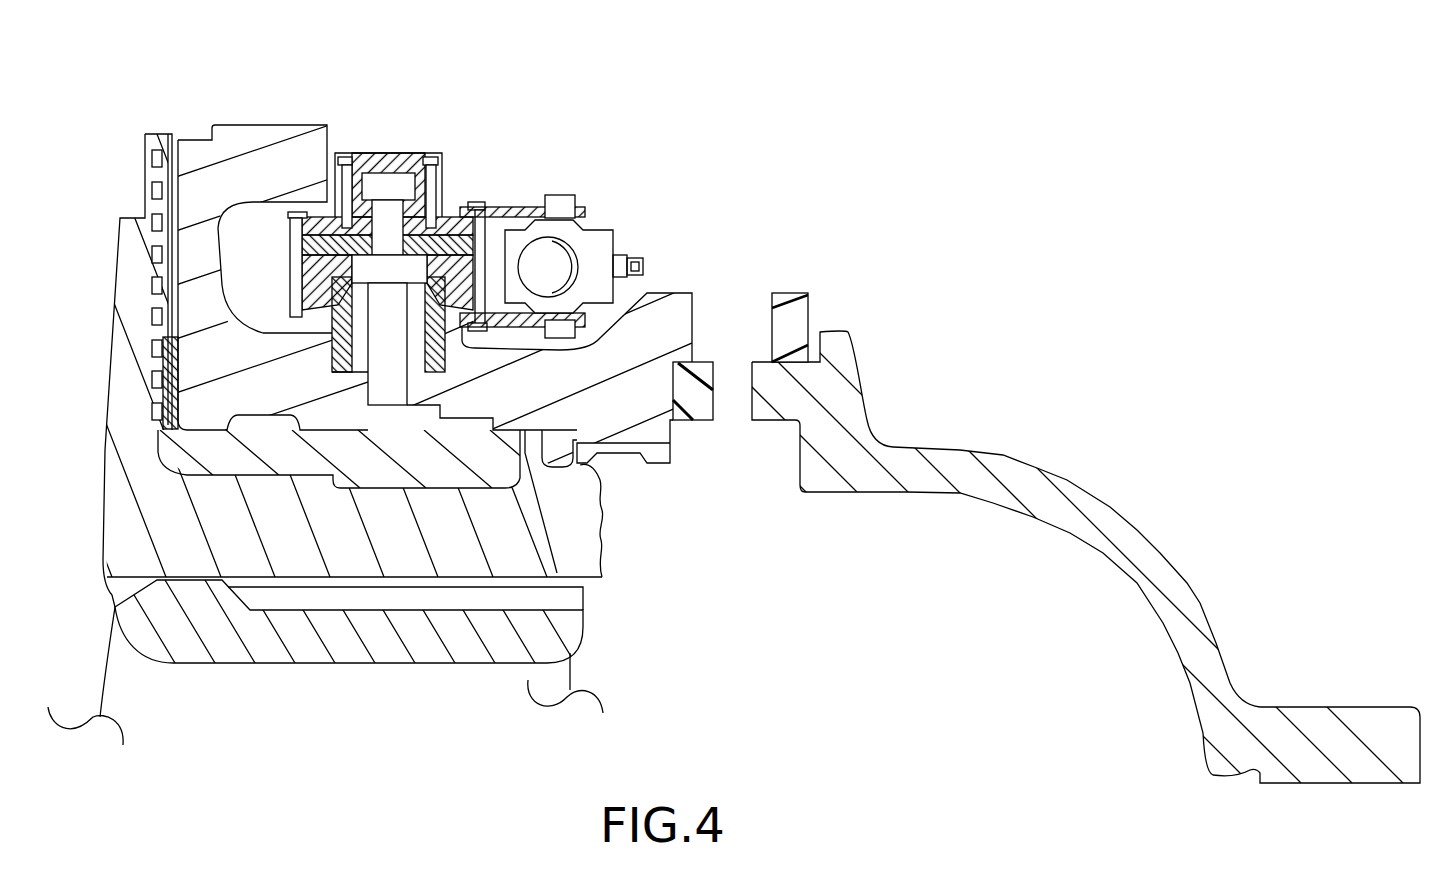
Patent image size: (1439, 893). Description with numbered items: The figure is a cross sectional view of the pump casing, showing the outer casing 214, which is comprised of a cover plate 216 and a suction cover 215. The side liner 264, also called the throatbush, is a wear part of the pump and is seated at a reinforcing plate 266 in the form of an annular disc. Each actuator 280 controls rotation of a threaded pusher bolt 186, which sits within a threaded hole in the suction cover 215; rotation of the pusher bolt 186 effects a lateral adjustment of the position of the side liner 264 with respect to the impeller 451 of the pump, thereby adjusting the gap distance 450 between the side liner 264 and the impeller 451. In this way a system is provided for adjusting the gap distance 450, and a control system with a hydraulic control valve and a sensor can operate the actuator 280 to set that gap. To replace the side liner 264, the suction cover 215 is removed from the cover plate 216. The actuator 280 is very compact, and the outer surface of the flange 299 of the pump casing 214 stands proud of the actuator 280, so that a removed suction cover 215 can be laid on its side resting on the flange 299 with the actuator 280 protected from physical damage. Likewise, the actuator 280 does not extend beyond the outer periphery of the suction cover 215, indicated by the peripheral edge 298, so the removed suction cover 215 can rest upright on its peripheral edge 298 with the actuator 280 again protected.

The threaded pusher bolt 186 is at (385, 373).
The outer casing 214 is at (830, 509).
The suction cover 215 is at (212, 137).
The cover plate 216 is at (1162, 548).
The side liner 264 is at (523, 520).
The reinforcing plate 266 is at (498, 473).
The actuator 280 is at (430, 152).
The peripheral edge 298 is at (782, 292).
The flange 299 is at (263, 123).
The gap distance 450 is at (605, 587).
The impeller 451 is at (437, 647).